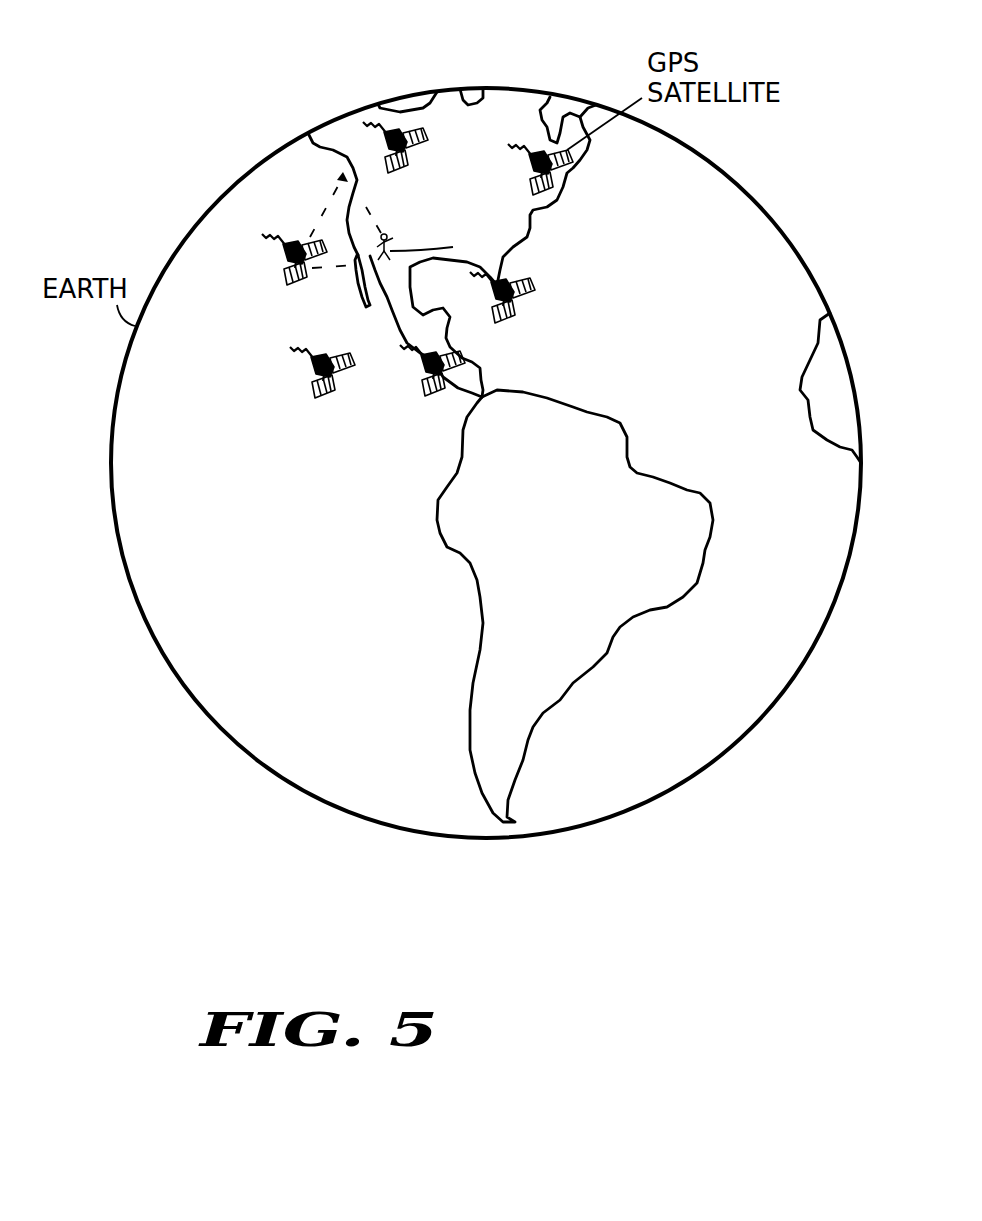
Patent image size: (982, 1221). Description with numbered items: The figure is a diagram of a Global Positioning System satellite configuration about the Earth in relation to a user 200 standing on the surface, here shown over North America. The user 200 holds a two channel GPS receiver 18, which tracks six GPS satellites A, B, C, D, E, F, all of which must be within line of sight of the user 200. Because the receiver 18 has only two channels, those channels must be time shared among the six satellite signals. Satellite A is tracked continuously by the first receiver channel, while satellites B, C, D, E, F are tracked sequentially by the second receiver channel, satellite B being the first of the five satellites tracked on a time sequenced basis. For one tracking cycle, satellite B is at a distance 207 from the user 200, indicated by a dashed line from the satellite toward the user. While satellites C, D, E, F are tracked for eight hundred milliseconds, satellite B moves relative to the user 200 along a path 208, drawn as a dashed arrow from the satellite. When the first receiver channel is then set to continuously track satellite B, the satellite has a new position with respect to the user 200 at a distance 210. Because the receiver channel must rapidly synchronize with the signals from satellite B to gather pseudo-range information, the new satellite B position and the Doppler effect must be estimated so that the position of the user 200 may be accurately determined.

The two channel GPS receiver 18 is at (396, 242).
The user 200 is at (446, 242).
The distance 207 is at (342, 266).
The path 208 is at (315, 213).
The distance 210 is at (364, 210).
The GPS satellite A is at (307, 397).
The GPS satellite B is at (277, 280).
The GPS satellite C is at (422, 131).
The GPS satellite D is at (525, 197).
The GPS satellite E is at (538, 280).
The GPS satellite F is at (421, 399).